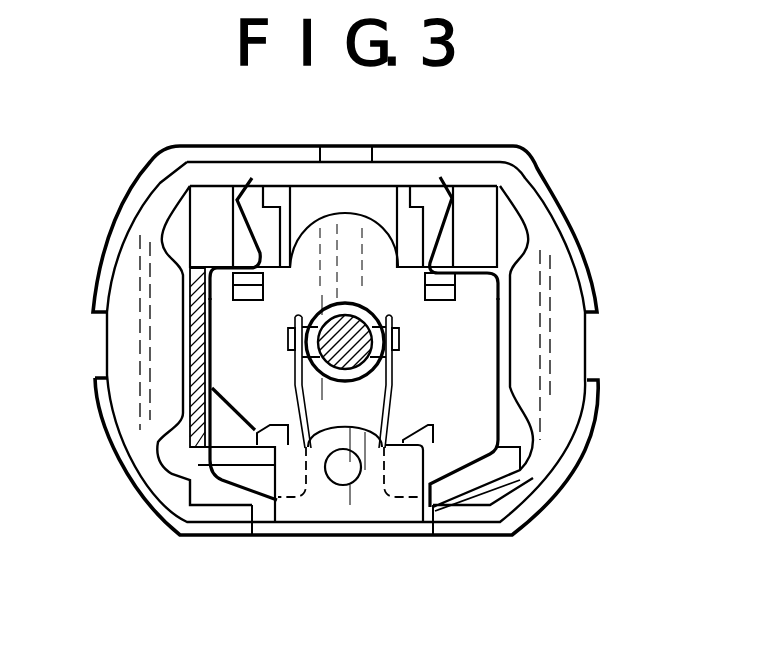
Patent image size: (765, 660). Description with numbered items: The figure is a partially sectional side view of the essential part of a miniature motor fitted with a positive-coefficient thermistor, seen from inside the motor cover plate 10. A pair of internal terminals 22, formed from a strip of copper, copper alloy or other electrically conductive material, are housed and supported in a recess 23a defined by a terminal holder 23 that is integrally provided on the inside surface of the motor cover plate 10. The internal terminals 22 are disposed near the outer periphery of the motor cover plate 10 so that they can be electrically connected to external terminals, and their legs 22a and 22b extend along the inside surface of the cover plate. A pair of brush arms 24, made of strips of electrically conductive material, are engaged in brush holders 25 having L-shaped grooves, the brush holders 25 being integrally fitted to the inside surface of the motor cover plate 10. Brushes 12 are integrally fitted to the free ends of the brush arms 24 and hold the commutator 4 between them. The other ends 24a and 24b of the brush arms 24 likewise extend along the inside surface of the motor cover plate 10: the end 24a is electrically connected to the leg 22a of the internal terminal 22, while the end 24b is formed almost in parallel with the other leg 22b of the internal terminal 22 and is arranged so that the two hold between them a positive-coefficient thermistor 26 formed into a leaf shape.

The motor cover plate 10 is at (533, 163).
The brush 12 is at (398, 337).
The commutator 4 is at (297, 378).
The internal terminal 22 is at (241, 177).
The leg of internal terminal 22a is at (497, 390).
The leg of internal terminal 22b is at (212, 370).
The terminal holder 23 is at (200, 190).
The recess 23a is at (428, 192).
The brush arm 24 is at (392, 385).
The end of brush arm 24a is at (460, 493).
The end of brush arm 24b is at (205, 430).
The brush holder 25 is at (285, 483).
The positive-coefficient thermistor 26 is at (184, 343).